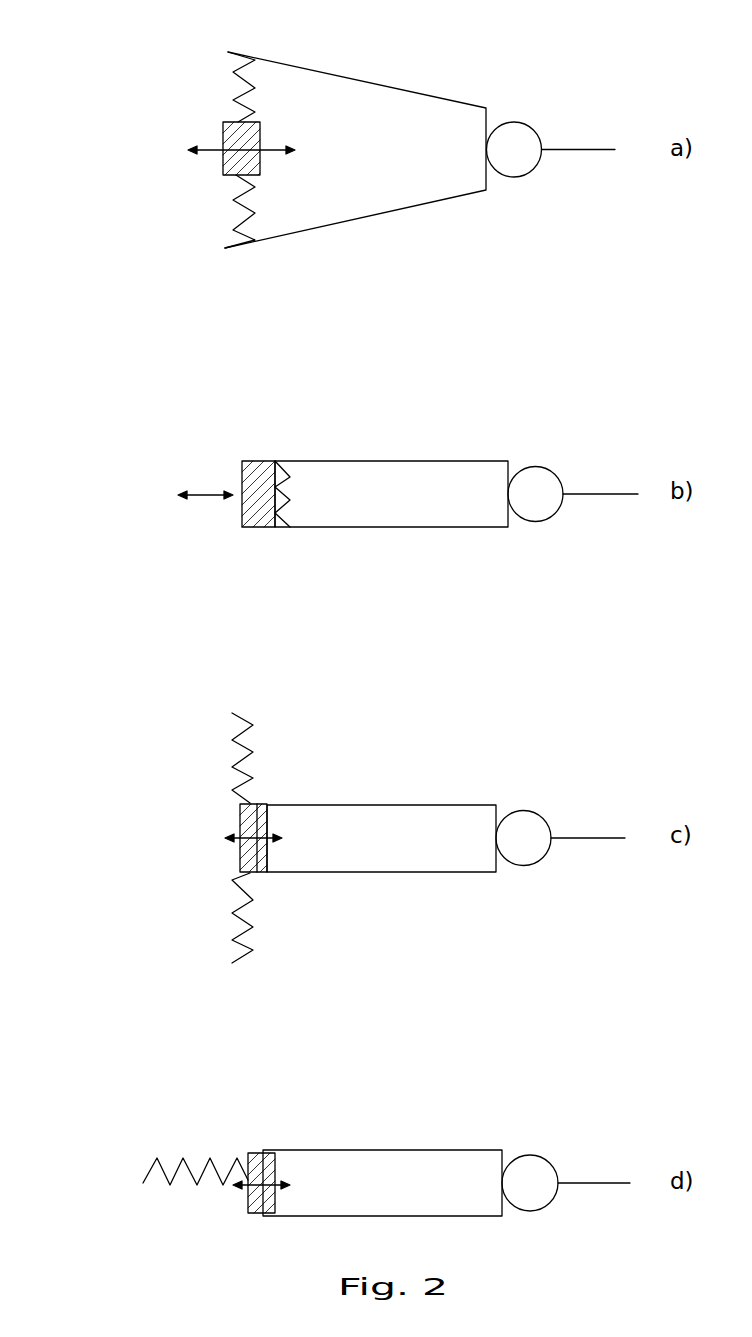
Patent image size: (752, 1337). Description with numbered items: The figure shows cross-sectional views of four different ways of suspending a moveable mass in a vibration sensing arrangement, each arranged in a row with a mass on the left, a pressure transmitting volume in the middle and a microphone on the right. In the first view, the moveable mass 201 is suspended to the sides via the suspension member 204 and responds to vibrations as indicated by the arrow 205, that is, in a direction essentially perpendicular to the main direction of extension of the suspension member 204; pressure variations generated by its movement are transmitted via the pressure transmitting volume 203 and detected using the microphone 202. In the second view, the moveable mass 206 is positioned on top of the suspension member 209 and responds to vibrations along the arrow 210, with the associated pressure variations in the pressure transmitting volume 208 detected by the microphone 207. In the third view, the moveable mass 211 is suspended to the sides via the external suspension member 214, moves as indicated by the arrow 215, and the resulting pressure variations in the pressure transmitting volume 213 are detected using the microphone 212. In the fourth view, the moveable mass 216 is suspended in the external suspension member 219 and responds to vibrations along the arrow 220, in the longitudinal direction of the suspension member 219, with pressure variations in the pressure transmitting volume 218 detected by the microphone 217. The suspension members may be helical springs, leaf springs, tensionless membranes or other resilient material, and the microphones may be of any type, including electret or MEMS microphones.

The moveable mass 201 is at (232, 135).
The microphone 202 is at (513, 137).
The pressure transmitting volume 203 is at (341, 112).
The suspension member 204 is at (238, 80).
The arrow 205 is at (210, 150).
The moveable mass 206 is at (250, 470).
The microphone 207 is at (538, 485).
The pressure transmitting volume 208 is at (420, 485).
The suspension member 209 is at (277, 525).
The arrow 210 is at (208, 492).
The moveable mass 211 is at (258, 808).
The microphone 212 is at (518, 822).
The pressure transmitting volume 213 is at (398, 820).
The external suspension member 214 is at (250, 918).
The arrow 215 is at (240, 850).
The moveable mass 216 is at (260, 1160).
The microphone 217 is at (532, 1170).
The pressure transmitting volume 218 is at (425, 1170).
The external suspension member 219 is at (148, 1173).
The arrow 220 is at (278, 1170).